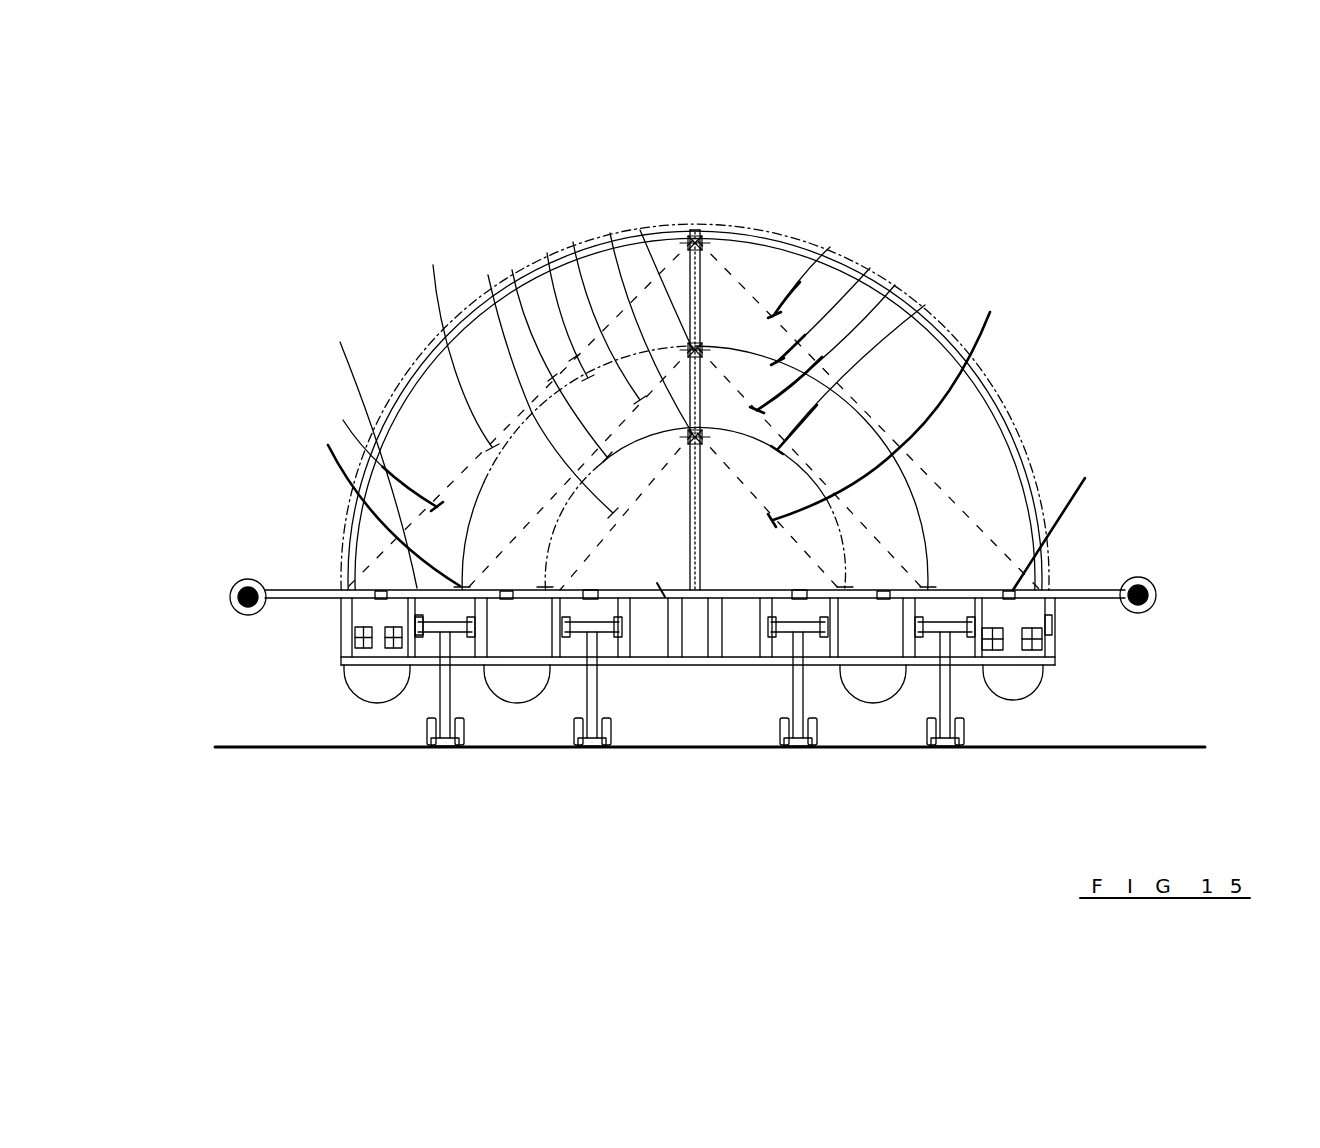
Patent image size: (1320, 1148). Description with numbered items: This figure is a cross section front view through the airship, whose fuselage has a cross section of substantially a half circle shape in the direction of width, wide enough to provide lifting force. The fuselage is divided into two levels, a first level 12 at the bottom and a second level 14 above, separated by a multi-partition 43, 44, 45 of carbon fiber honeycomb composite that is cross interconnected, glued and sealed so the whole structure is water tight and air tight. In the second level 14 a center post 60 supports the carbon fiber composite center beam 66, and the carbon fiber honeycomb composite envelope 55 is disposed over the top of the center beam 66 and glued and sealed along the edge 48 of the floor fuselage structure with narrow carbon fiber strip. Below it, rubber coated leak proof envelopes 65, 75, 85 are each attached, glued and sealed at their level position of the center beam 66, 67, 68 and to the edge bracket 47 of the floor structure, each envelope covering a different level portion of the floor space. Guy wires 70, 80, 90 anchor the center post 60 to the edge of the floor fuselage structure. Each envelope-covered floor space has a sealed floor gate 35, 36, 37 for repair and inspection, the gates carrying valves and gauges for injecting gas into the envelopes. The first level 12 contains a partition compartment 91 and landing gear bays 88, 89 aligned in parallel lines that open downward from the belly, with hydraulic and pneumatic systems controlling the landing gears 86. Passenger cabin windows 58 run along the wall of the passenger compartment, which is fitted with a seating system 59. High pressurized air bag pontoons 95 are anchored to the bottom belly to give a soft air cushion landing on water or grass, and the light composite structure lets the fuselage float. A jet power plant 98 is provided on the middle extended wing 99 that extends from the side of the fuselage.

The first level 12 is at (912, 662).
The second level 14 is at (662, 590).
The floor gate 35 is at (603, 635).
The floor gate 36 is at (446, 742).
The floor gate 37 is at (357, 583).
The multi-partition 43 is at (735, 612).
The multi-partition 44 is at (768, 640).
The multi-partition 45 is at (562, 640).
The edge bracket 47 is at (1120, 508).
The edge 48 is at (337, 588).
The carbon fiber honeycomb composite envelope 55 is at (396, 395).
The passenger cabin windows 58 is at (338, 620).
The seating system 59 is at (355, 640).
The center post 60 is at (705, 285).
The envelope 65 is at (430, 370).
The center beam 66 is at (691, 229).
The center beam 67 is at (640, 230).
The center beam 68 is at (610, 233).
The guy wire 70 is at (887, 186).
The envelope 75 is at (547, 253).
The guy wire 80 is at (573, 242).
The envelope 85 is at (512, 270).
The landing gears 86 is at (432, 748).
The landing gear bay 88 is at (438, 642).
The landing gear bay 89 is at (582, 645).
The guy wire 90 is at (488, 275).
The partition compartment 91 is at (672, 640).
The high pressurized air bag pontoon 95 is at (360, 682).
The jet power plant 98 is at (233, 587).
The middle extended wing 99 is at (300, 590).